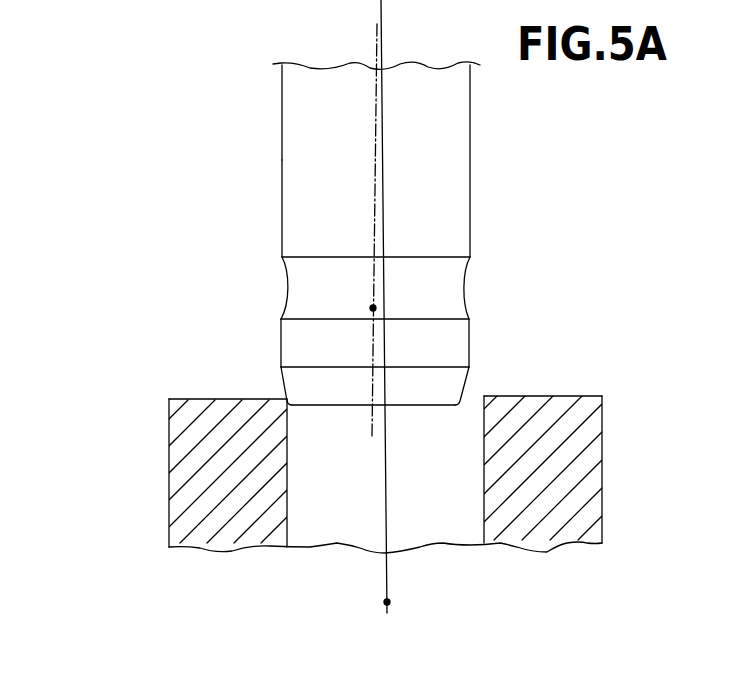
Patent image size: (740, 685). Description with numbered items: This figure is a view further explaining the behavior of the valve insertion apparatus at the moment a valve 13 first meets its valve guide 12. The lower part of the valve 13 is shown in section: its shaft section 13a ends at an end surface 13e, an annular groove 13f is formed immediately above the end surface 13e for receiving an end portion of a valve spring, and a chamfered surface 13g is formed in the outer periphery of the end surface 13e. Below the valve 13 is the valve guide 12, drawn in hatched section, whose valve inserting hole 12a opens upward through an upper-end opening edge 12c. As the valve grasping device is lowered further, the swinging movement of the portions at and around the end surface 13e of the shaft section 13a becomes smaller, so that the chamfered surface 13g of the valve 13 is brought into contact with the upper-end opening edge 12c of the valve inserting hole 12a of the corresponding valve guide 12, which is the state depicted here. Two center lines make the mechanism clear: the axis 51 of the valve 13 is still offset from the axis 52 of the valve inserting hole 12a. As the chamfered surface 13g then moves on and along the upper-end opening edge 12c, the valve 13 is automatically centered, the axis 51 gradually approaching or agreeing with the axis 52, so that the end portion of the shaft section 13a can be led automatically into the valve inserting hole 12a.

The valve 13 is at (276, 97).
The shaft section 13a is at (287, 140).
The end surface 13e is at (418, 407).
The annular groove 13f is at (461, 287).
The chamfered surface 13g is at (284, 384).
The valve guide 12 is at (168, 460).
The valve inserting hole 12a is at (484, 513).
The upper-end opening edge 12c is at (483, 397).
The axis of the valve 51 is at (373, 308).
The axis 52 is at (387, 602).